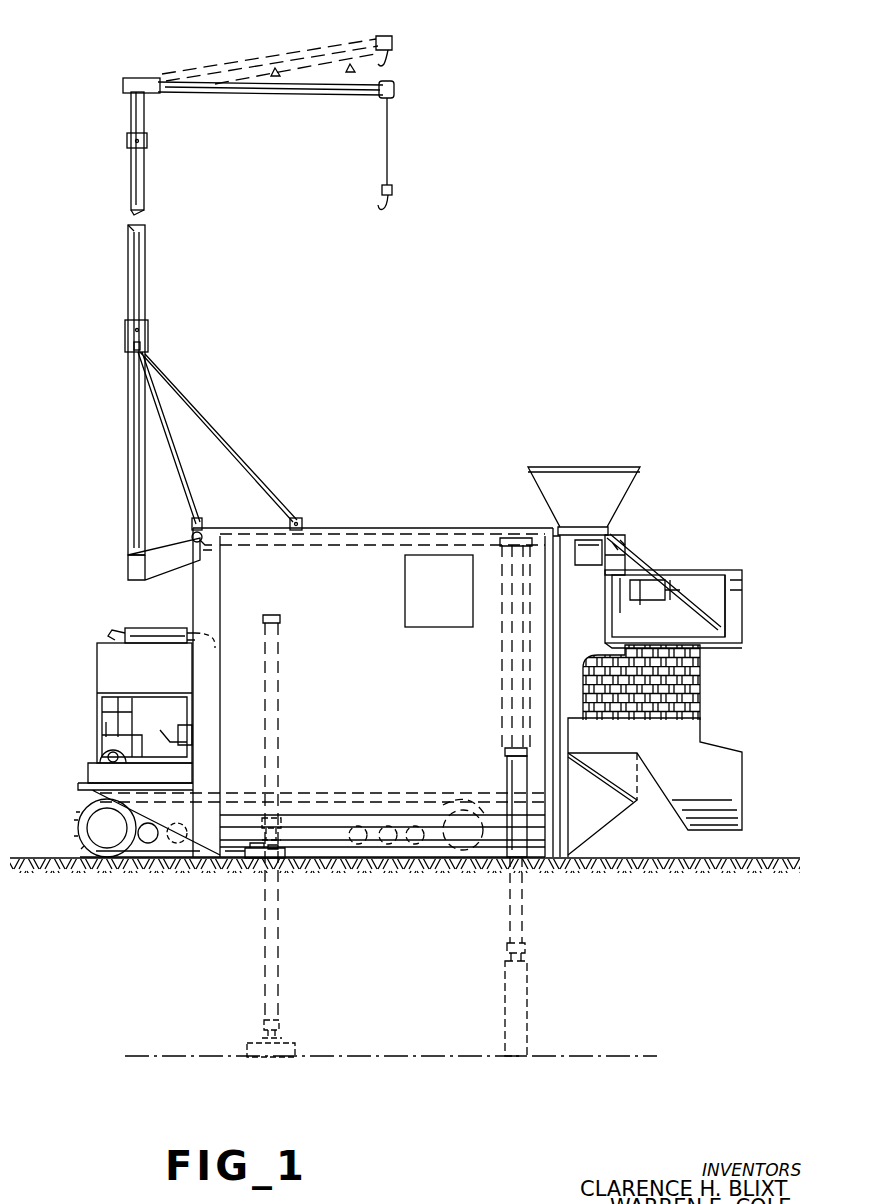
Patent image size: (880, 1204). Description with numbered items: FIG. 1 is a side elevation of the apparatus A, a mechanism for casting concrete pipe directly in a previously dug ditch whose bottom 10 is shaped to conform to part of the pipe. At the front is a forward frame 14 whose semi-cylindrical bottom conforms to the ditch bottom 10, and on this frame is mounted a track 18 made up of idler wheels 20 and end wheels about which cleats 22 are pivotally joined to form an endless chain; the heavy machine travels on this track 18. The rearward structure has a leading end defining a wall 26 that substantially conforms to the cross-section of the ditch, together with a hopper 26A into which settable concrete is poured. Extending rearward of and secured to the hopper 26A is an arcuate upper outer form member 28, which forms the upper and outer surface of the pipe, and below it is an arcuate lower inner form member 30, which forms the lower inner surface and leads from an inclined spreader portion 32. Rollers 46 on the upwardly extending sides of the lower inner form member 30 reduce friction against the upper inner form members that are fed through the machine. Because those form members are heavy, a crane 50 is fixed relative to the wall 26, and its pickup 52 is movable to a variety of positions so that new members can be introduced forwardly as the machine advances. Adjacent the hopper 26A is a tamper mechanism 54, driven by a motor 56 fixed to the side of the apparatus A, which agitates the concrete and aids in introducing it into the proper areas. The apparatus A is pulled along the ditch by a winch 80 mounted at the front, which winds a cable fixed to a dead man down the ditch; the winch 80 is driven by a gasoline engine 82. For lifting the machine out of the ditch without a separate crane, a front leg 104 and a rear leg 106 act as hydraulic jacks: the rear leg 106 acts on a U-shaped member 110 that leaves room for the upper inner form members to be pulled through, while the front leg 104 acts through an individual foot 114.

The bottom portion of the ditch 10 is at (752, 866).
The forward frame 14 is at (362, 632).
The track 18 is at (82, 844).
The idler wheels 20 is at (148, 845).
The cleats 22 is at (95, 804).
The wall 26 is at (553, 656).
The hopper 26A is at (575, 466).
The upper outer form member 28 is at (742, 575).
The lower inner form member 30 is at (702, 830).
The inclined spreader portion 32 is at (672, 822).
The rollers 46 is at (700, 674).
The crane 50 is at (130, 200).
The pickup of crane 52 is at (392, 192).
The tamper mechanism 54 is at (648, 553).
The motor 56 is at (640, 602).
The winch 80 is at (100, 760).
The gasoline engine 82 is at (145, 687).
The leg 104 is at (280, 705).
The leg 106 is at (515, 685).
The U-shaped member 110 is at (512, 782).
The foot 114 is at (262, 862).
The apparatus A is at (348, 577).